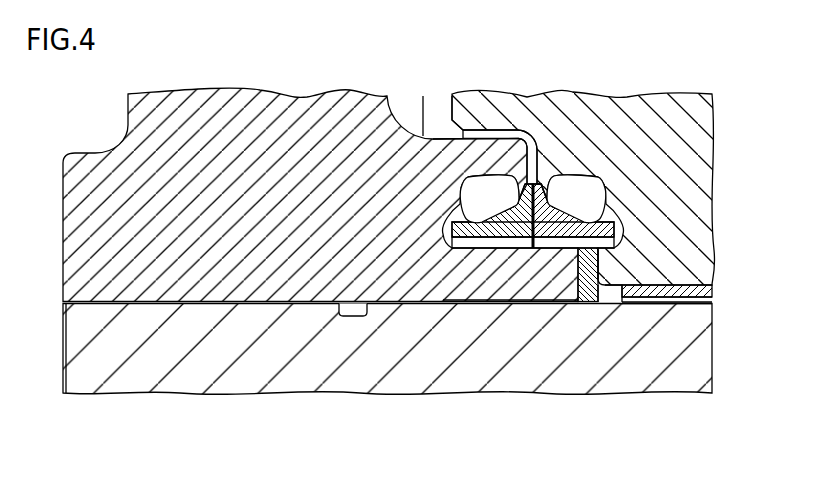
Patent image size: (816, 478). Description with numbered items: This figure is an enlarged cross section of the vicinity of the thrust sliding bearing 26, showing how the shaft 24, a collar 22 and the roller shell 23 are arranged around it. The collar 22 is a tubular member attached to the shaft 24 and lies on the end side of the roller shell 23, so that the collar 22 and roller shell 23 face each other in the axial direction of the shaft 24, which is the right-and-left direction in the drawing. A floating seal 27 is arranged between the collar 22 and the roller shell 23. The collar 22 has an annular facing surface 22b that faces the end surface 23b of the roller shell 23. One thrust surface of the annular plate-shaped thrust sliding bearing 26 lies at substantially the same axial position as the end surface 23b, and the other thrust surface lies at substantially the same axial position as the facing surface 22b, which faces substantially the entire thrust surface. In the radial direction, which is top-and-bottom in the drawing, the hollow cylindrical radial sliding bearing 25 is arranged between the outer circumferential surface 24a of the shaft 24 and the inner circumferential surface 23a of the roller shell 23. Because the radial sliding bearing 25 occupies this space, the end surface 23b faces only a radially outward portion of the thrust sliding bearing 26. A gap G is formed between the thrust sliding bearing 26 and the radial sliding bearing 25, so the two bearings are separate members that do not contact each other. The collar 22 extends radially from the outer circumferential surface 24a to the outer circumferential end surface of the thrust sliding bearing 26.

The collar 22 is at (270, 182).
The roller shell 23 is at (578, 145).
The shaft 24 is at (253, 367).
The floating seal 27 is at (500, 210).
The facing surface 22b is at (590, 278).
The end surface 23b is at (593, 253).
The inner circumferential surface 23a is at (673, 292).
The radial sliding bearing 25 is at (703, 298).
The outer circumferential surface 24a is at (693, 297).
The thrust sliding bearing 26 is at (598, 285).
The gap G is at (612, 285).